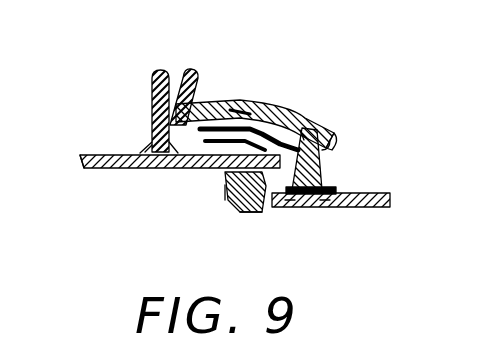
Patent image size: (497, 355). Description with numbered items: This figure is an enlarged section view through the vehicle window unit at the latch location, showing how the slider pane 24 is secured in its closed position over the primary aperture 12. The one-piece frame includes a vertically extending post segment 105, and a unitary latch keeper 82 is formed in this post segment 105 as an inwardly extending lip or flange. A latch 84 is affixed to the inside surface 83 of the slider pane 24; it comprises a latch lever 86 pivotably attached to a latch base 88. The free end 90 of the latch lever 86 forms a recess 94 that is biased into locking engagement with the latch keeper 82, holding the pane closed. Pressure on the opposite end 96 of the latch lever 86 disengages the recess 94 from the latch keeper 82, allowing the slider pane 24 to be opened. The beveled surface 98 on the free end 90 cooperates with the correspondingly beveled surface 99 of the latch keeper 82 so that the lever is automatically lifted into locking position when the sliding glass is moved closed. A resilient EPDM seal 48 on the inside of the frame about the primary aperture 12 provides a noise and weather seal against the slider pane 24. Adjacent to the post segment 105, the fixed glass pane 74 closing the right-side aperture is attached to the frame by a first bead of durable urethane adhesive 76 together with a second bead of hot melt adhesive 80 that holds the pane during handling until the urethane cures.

The primary aperture 12 is at (232, 203).
The slider pane 24 is at (84, 156).
The resilient seal 48 is at (227, 191).
The fixed glass pane 74 is at (390, 191).
The first bead of adhesive 76 is at (320, 201).
The bead of hot melt adhesive 80 is at (290, 200).
The latch keeper 82 is at (320, 168).
The inside surface 83 is at (128, 154).
The latch 84 is at (162, 70).
The latch lever 86 is at (300, 130).
The latch base 88 is at (150, 128).
The free end 90 is at (320, 127).
The recess 94 is at (310, 118).
The opposite end 96 is at (200, 85).
The beveled surface 98 is at (325, 141).
The beveled surface 99 is at (268, 140).
The post segment 105 is at (248, 212).